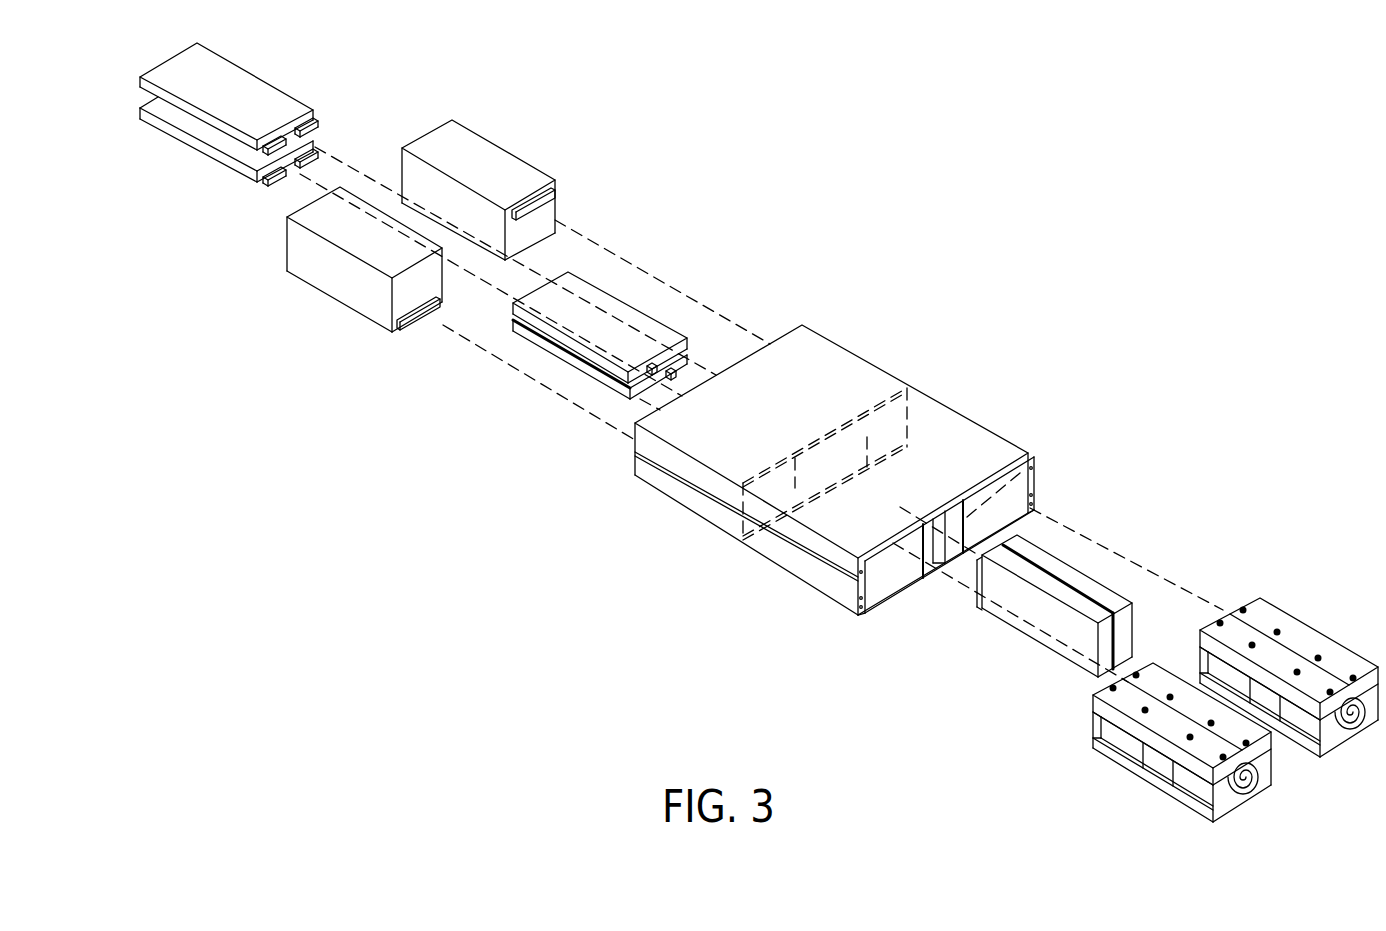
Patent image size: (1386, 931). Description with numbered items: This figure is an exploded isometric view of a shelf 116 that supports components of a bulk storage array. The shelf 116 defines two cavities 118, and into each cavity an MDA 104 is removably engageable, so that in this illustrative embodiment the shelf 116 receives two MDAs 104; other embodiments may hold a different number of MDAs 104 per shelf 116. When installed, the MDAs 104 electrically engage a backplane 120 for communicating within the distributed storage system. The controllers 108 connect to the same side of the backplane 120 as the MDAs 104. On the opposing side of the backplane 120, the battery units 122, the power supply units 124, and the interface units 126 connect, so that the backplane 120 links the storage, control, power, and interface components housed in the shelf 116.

The MDA 104 is at (1275, 602).
The controllers 108 is at (1088, 585).
The shelf 116 is at (698, 512).
The cavities 118 is at (883, 587).
The backplane 120 is at (833, 447).
The battery units 122 is at (592, 298).
The power supply units 124 is at (475, 163).
The interface units 126 is at (255, 97).